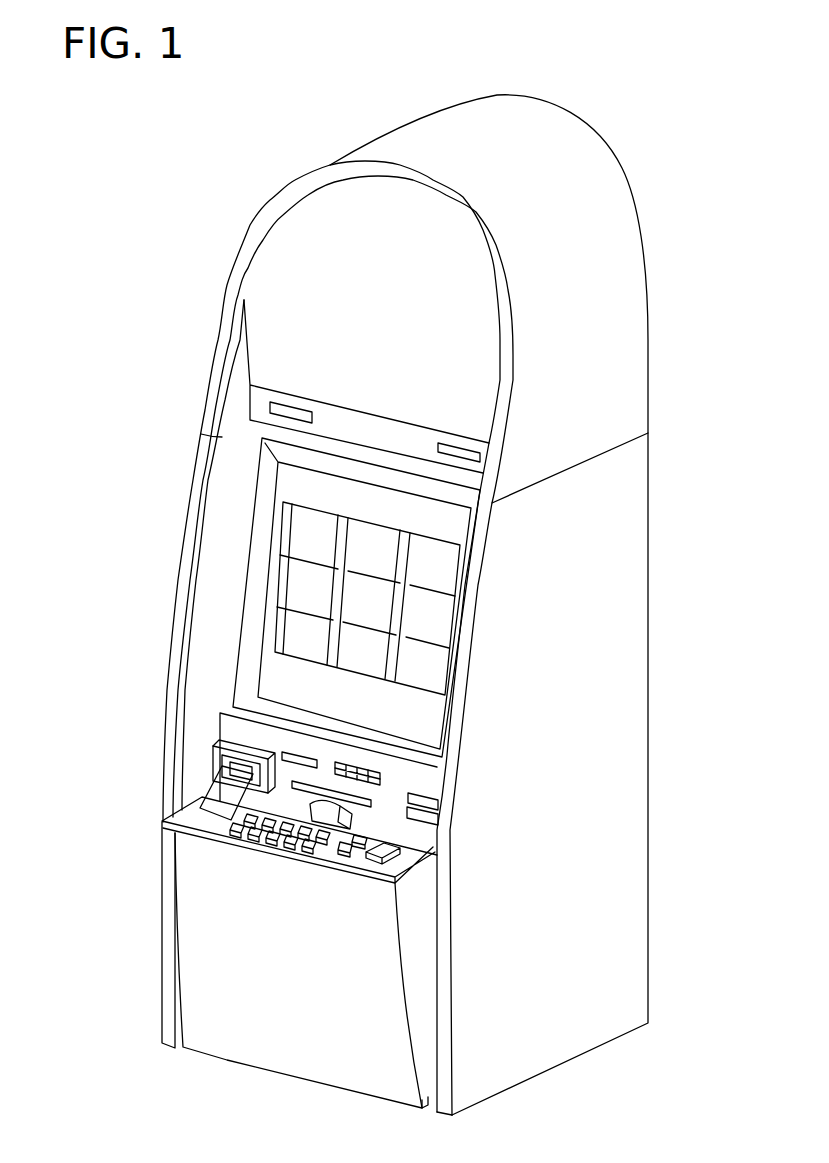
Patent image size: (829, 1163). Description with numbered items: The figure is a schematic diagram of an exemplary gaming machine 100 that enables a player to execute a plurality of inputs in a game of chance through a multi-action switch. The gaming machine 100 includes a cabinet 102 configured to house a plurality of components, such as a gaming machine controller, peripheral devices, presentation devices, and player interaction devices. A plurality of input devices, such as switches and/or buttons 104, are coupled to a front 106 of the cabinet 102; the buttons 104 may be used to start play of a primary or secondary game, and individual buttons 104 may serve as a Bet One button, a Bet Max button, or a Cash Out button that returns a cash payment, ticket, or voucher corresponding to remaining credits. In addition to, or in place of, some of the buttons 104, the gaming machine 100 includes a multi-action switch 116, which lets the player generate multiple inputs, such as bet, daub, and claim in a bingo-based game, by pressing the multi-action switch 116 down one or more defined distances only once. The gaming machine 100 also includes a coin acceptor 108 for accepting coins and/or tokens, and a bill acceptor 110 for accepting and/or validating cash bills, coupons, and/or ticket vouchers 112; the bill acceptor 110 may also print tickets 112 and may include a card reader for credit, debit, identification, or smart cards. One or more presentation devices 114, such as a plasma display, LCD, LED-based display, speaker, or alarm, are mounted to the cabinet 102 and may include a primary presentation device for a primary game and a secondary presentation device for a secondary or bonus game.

The gaming machine 100 is at (648, 48).
The cabinet 102 is at (595, 177).
The buttons 104 is at (262, 848).
The front 106 is at (258, 402).
The coin acceptor 108 is at (330, 824).
The bill acceptor 110 is at (213, 748).
The ticket vouchers 112 is at (212, 800).
The presentation devices 114 is at (430, 663).
The multi-action switch 116 is at (380, 859).